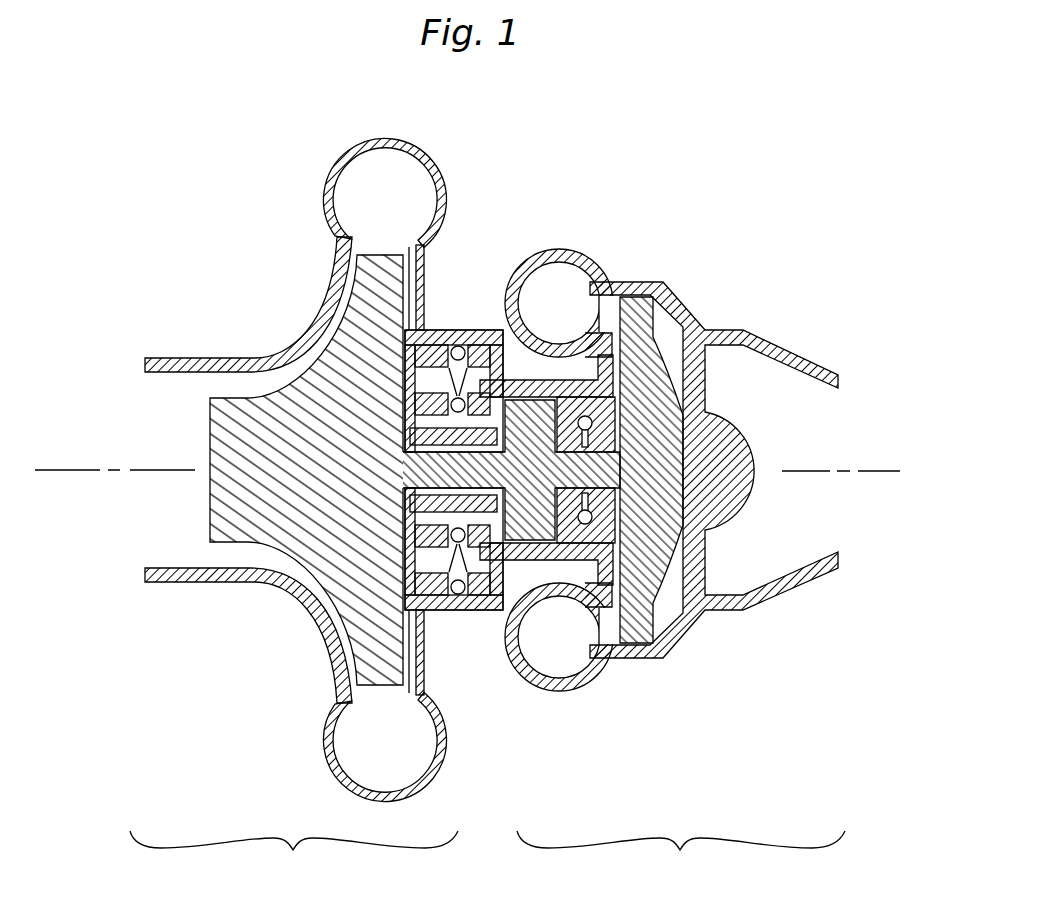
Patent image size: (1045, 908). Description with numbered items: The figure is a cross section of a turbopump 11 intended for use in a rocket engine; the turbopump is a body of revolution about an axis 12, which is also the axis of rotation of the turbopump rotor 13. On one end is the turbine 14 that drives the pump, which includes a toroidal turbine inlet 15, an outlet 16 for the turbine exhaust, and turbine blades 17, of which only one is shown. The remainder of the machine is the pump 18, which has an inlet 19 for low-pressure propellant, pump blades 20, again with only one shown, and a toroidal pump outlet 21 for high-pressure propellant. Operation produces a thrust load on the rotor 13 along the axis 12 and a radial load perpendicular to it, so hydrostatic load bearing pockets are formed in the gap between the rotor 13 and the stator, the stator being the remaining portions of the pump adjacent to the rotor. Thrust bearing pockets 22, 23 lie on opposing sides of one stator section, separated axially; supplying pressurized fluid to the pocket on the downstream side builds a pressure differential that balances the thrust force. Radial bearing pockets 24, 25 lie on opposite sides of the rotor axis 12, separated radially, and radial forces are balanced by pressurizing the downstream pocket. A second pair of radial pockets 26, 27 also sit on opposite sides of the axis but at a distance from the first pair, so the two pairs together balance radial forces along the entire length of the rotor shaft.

The turbopump 11 is at (654, 126).
The axis 12 is at (165, 468).
The turbopump rotor 13 is at (560, 420).
The turbine 14 is at (681, 859).
The toroidal turbine inlet 15 is at (557, 268).
The outlet 16 is at (812, 407).
The turbine blades 17 is at (634, 313).
The pump 18 is at (294, 859).
The inlet 19 is at (163, 398).
The pump blades 20 is at (367, 350).
The toroidal pump outlet 21 is at (360, 183).
The thrust bearing pocket 22 is at (372, 415).
The thrust bearing pocket 23 is at (545, 372).
The radial bearing pocket 24 is at (438, 448).
The radial bearing pocket 25 is at (438, 492).
The radial pocket 26 is at (592, 418).
The radial pocket 27 is at (655, 640).